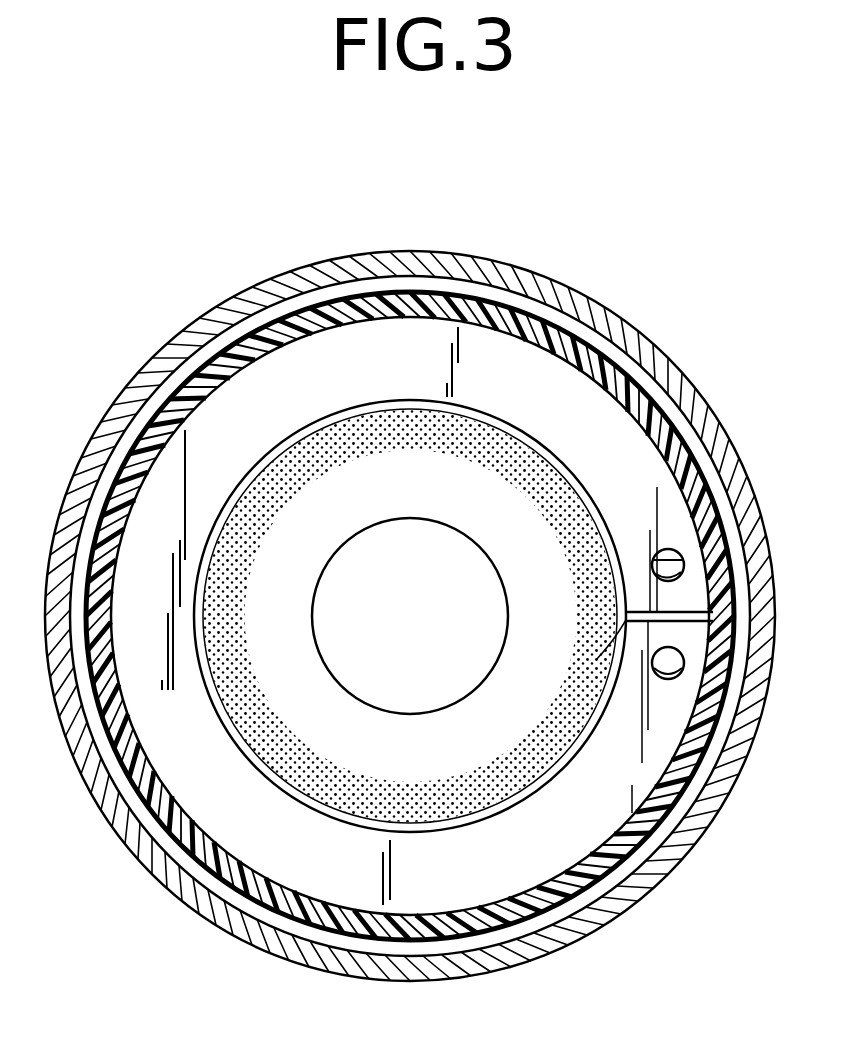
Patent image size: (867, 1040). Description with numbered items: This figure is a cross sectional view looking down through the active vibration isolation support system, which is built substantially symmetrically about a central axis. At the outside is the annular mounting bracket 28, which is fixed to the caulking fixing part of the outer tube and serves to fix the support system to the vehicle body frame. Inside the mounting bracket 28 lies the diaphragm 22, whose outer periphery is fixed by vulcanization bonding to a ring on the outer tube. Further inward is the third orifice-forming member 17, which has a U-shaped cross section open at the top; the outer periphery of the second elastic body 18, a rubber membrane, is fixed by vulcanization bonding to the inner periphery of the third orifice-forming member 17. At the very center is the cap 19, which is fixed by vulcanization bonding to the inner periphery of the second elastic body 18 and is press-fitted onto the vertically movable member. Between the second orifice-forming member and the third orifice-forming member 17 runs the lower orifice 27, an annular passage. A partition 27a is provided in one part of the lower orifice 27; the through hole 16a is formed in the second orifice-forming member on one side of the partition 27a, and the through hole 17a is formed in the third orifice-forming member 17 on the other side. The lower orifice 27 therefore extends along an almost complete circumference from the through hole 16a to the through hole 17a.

The mounting bracket 28 is at (603, 318).
The diaphragm 22 is at (262, 338).
The lower orifice 27 is at (376, 386).
The second elastic body 18 is at (330, 735).
The third orifice-forming member 17 is at (408, 416).
The cap 19 is at (437, 640).
The through hole 16a is at (655, 555).
The through hole 17a is at (653, 675).
The partition 27a is at (633, 625).